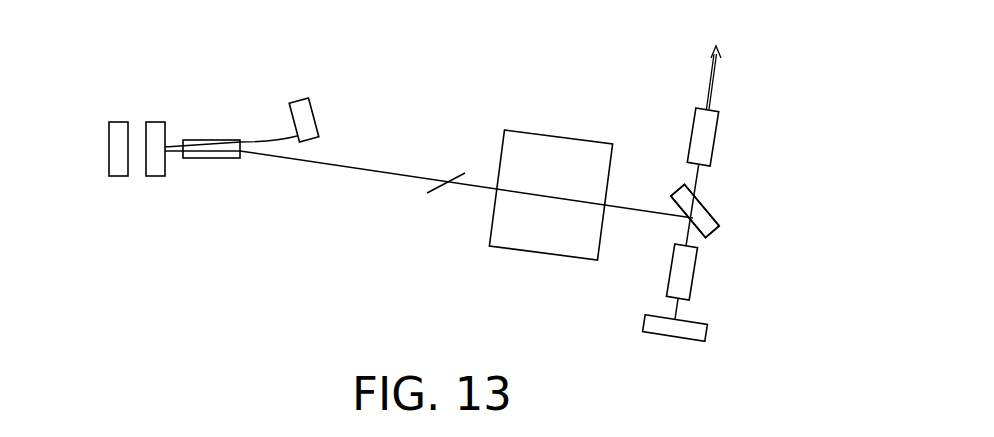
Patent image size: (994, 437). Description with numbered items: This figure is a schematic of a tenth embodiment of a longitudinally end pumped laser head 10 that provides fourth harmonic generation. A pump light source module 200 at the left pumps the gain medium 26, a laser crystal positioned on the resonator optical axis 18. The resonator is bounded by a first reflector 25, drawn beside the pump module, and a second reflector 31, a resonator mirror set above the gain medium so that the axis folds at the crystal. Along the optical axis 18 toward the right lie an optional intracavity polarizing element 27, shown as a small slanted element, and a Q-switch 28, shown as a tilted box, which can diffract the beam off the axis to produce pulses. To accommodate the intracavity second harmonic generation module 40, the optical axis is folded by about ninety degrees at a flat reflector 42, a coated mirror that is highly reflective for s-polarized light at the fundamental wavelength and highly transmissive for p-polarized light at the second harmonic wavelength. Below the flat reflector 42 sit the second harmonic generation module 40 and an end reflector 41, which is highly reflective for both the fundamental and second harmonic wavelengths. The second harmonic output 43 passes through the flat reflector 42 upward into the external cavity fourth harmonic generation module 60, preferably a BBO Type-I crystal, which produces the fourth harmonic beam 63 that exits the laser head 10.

The laser head 10 is at (506, 40).
The resonator optical axis 18 is at (466, 199).
The first reflector 25 is at (126, 191).
The gain medium 26 is at (243, 188).
The intracavity polarizing element 27 is at (419, 150).
The Q-switch 28 is at (547, 170).
The second reflector 31 is at (331, 97).
The second harmonic generation module 40 is at (610, 290).
The end reflector 41 is at (584, 338).
The flat reflector 42 is at (658, 175).
The second harmonic output 43 is at (736, 195).
The fourth harmonic generation module 60 is at (753, 125).
The fourth harmonic beam 63 is at (764, 69).
The pump light source module 200 is at (84, 171).